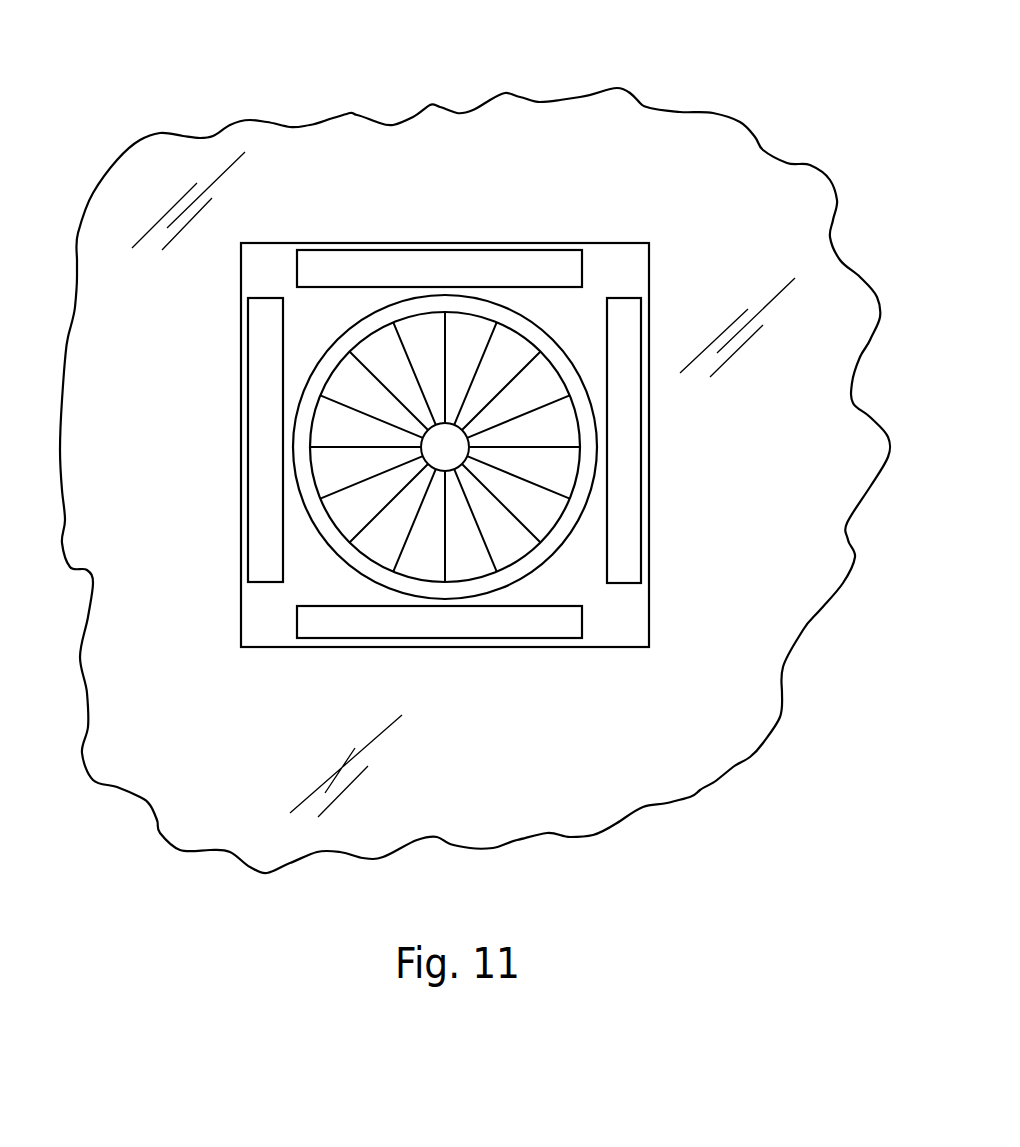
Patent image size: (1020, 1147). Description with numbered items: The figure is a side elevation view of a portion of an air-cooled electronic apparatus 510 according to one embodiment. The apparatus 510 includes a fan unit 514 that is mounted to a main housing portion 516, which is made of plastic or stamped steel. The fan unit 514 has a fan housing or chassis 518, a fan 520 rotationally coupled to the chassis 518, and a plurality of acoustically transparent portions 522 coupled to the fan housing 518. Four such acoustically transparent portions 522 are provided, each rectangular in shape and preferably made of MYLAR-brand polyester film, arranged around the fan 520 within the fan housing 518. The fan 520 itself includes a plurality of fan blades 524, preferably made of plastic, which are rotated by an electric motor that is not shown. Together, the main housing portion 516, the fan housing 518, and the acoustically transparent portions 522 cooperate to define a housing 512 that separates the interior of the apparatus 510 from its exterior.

The air-cooled electronic apparatus 510 is at (784, 116).
The housing 512 is at (539, 76).
The fan unit 514 is at (600, 228).
The main housing portion 516 is at (772, 625).
The fan housing 518 is at (623, 640).
The fan 520 is at (555, 333).
The acoustically transparent portions 522 is at (450, 263).
The fan blades 524 is at (562, 430).